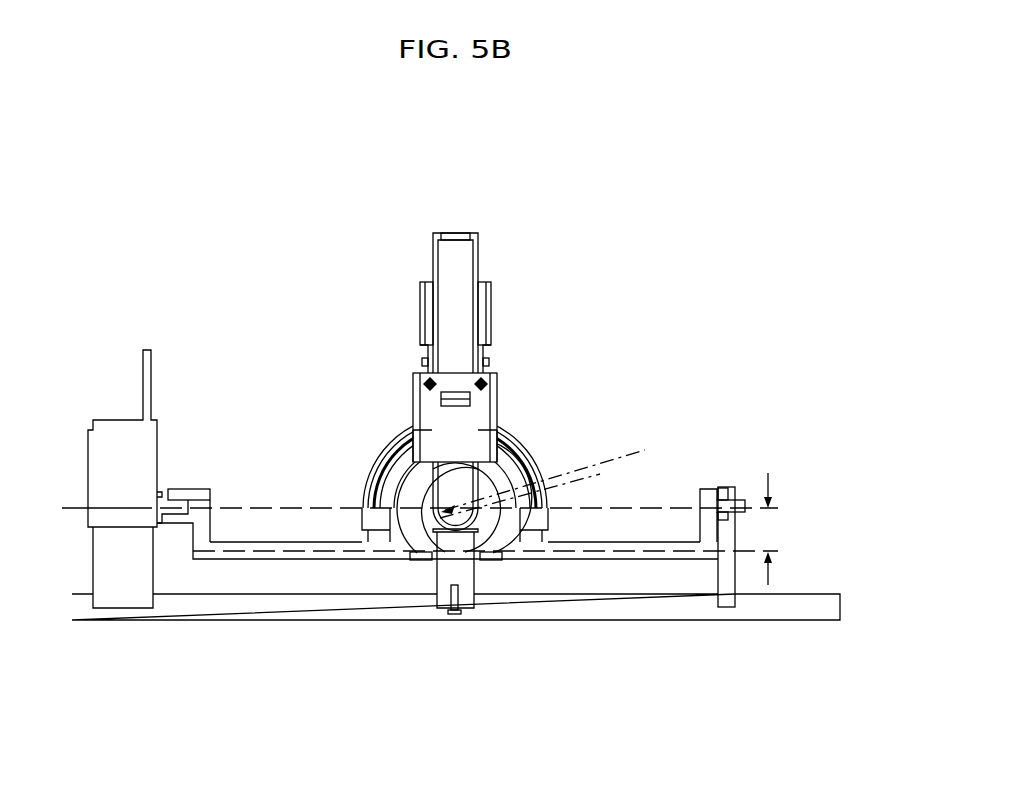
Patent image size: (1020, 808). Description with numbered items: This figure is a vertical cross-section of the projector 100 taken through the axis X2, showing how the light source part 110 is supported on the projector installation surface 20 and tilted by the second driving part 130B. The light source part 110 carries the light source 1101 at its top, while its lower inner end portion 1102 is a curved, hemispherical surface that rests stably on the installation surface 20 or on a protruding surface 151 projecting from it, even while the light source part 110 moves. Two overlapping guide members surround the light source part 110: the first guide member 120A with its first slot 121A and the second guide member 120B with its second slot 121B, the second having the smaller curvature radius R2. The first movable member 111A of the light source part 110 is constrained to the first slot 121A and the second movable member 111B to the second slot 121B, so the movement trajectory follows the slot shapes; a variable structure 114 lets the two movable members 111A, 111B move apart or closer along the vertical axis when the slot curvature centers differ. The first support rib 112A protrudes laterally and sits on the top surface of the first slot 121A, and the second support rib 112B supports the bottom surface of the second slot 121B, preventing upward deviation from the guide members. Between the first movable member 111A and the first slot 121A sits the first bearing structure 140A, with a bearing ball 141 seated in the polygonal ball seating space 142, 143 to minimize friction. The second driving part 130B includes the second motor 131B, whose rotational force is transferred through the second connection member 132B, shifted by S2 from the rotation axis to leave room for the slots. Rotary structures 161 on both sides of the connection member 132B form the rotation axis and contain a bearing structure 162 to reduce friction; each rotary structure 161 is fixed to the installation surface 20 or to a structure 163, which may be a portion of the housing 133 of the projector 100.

The projector 100 is at (106, 214).
The light source part 110 is at (487, 257).
The light source 1101 is at (462, 237).
The inner end portion 1102 is at (428, 533).
The first movable member 111A is at (425, 306).
The second movable member 111B is at (438, 480).
The first support rib 112A is at (422, 362).
The second support rib 112B is at (378, 506).
The variable structure 114 is at (445, 426).
The first guide member 120A is at (497, 360).
The second guide member 120B is at (556, 492).
The first slot 121A is at (428, 380).
The second slot 121B is at (530, 458).
The second driving part 130B is at (300, 672).
The second motor 131B is at (136, 504).
The second connection member 132B is at (272, 560).
The housing 133 is at (121, 610).
The structure 163 is at (728, 608).
The first bearing structure 140A is at (601, 345).
The bearing ball 141 is at (492, 372).
The ball seating space 142 is at (494, 383).
The ball seating space 143 is at (490, 398).
The protruding surface 151 is at (465, 605).
The rotary structure 161 is at (188, 486).
The bearing structure 162 is at (722, 490).
The projector installation surface 20 is at (338, 612).
The curvature radius R2 is at (600, 463).
The shift distance S2 is at (779, 525).
The axis X2 is at (405, 523).